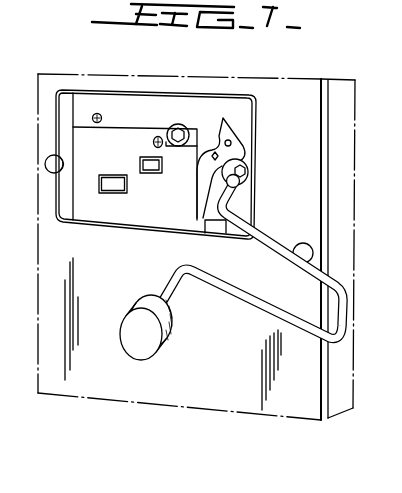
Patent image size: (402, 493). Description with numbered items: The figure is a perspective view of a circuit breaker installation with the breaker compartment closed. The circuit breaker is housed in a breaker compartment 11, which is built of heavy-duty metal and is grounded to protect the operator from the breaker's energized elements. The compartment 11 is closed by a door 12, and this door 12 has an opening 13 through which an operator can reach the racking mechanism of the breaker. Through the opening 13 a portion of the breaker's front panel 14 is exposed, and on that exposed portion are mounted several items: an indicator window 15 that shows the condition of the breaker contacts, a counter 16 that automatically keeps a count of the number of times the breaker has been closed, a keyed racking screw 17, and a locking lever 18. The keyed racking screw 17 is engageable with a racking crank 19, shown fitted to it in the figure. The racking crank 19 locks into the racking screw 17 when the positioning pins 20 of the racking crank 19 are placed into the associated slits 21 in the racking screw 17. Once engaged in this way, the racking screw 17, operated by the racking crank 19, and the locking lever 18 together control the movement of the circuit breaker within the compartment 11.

The breaker compartment 11 is at (350, 136).
The door 12 is at (110, 291).
The opening 13 is at (122, 91).
The front panel 14 is at (122, 157).
The indicator window 15 is at (108, 194).
The counter 16 is at (149, 174).
The keyed racking screw 17 is at (247, 167).
The locking lever 18 is at (240, 131).
The racking crank 19 is at (270, 247).
The positioning pins 20 is at (247, 188).
The slits 21 is at (246, 174).